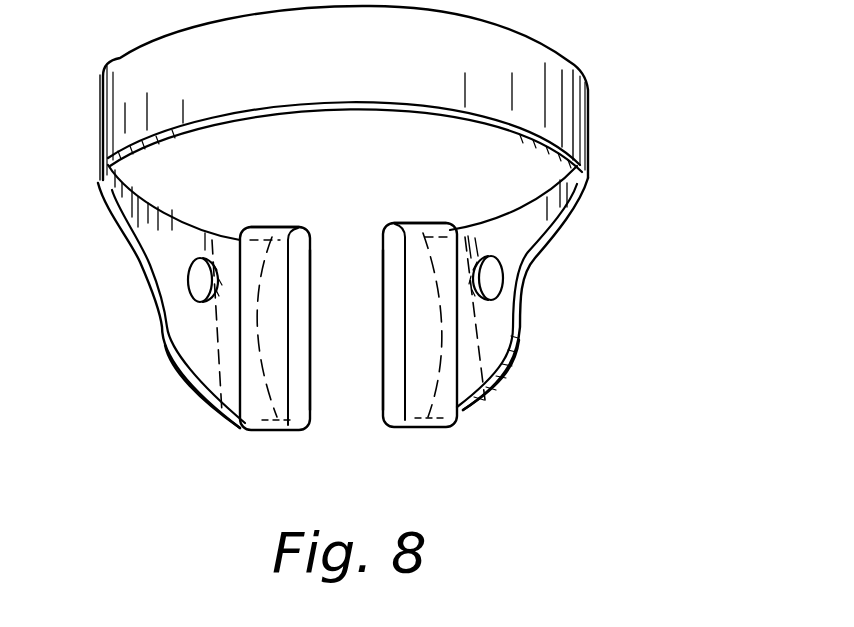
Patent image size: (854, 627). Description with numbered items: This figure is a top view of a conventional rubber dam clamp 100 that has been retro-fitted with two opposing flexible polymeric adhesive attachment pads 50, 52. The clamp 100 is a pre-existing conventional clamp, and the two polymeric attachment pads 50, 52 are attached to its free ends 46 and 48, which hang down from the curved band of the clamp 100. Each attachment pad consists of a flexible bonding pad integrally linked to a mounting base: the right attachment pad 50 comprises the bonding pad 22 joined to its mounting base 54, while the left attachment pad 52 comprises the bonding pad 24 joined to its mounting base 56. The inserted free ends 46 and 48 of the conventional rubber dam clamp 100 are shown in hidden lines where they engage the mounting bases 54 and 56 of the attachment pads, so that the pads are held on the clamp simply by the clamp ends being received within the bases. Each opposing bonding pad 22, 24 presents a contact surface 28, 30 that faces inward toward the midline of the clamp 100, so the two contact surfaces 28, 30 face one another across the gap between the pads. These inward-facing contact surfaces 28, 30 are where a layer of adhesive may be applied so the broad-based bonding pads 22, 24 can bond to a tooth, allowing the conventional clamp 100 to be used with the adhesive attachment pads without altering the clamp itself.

The conventional rubber dam clamp 100 is at (570, 43).
The bonding pad 22 is at (400, 410).
The bonding pad 24 is at (298, 417).
The contact surface 28 is at (383, 390).
The contact surface 30 is at (310, 392).
The free end 46 is at (500, 330).
The free end 48 is at (200, 362).
The polymeric attachment pad 50 is at (427, 217).
The polymeric attachment pad 52 is at (277, 219).
The mounting base 54 is at (460, 410).
The mounting base 56 is at (255, 408).